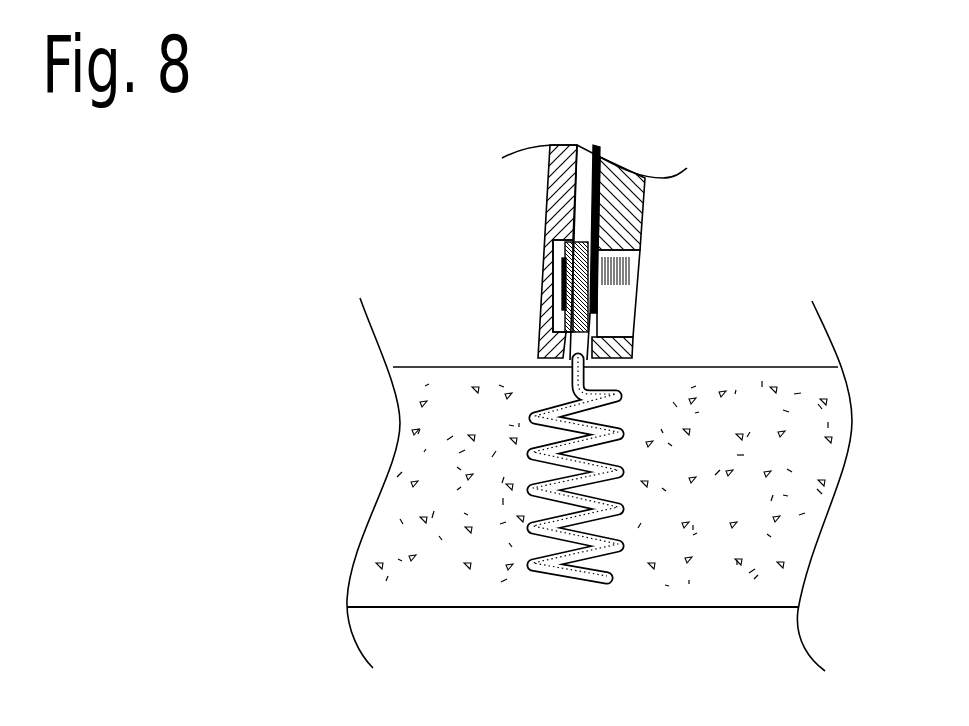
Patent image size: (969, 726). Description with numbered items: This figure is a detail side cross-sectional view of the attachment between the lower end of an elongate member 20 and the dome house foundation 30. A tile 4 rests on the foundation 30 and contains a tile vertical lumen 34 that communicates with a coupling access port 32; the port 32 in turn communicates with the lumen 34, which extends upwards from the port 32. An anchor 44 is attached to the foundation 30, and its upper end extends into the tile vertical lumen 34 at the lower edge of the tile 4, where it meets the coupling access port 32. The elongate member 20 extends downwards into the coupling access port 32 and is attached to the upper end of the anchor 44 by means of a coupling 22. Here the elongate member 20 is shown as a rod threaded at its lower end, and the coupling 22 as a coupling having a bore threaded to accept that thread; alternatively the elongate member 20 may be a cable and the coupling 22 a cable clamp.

The tile 4 is at (547, 192).
The elongate member 20 is at (577, 208).
The coupling 22 is at (557, 290).
The dome house foundation 30 is at (753, 396).
The coupling access port 32 is at (617, 302).
The tile vertical lumen 34 is at (605, 192).
The anchor 44 is at (552, 397).